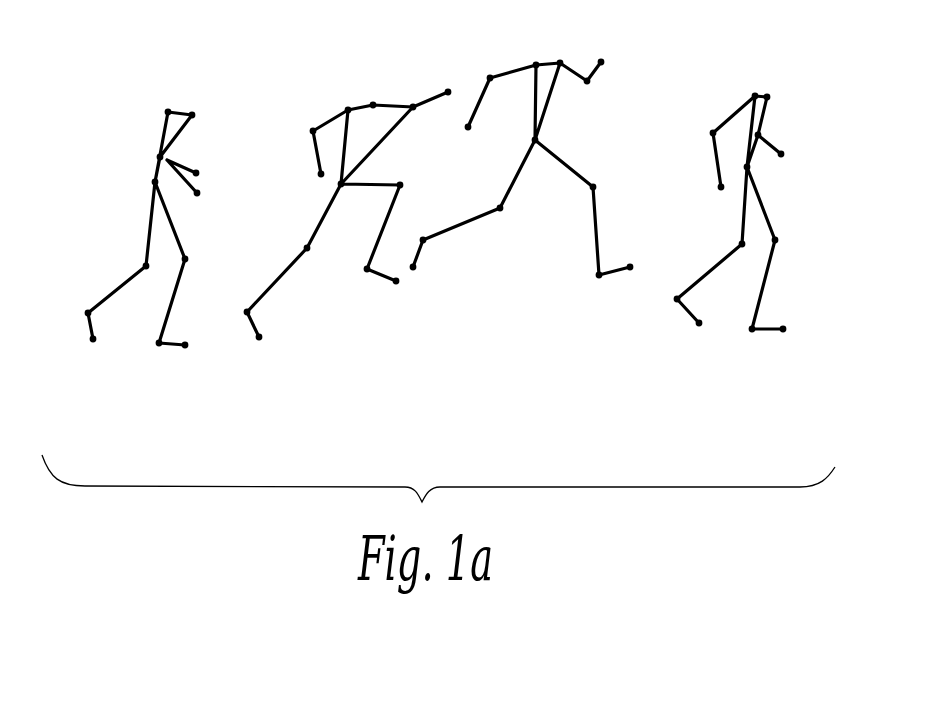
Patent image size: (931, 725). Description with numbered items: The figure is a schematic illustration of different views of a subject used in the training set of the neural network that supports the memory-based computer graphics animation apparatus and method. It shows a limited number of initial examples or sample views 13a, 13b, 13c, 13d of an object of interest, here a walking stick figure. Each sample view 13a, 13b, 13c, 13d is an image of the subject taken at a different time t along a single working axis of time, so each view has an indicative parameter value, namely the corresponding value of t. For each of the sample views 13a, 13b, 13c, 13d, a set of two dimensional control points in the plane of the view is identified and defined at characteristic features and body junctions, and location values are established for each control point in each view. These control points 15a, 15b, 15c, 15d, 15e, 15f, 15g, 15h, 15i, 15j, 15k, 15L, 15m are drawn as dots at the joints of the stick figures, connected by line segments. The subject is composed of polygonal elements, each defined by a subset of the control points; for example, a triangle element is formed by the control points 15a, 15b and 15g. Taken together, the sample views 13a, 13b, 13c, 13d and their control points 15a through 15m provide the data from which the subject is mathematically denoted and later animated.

The sample view 13a is at (203, 261).
The sample view 13b is at (350, 244).
The sample view 13c is at (543, 239).
The sample view 13d is at (708, 353).
The control point 15a is at (167, 113).
The control point 15b is at (190, 113).
The control point 15c is at (313, 131).
The control point 15d is at (413, 105).
The control point 15e is at (321, 177).
The control point 15f is at (603, 63).
The control point 15g is at (538, 138).
The control point 15h is at (499, 207).
The control point 15i is at (595, 187).
The control point 15j is at (425, 242).
The control point 15k is at (596, 275).
The control point 15L is at (259, 336).
The control point 15m is at (396, 283).